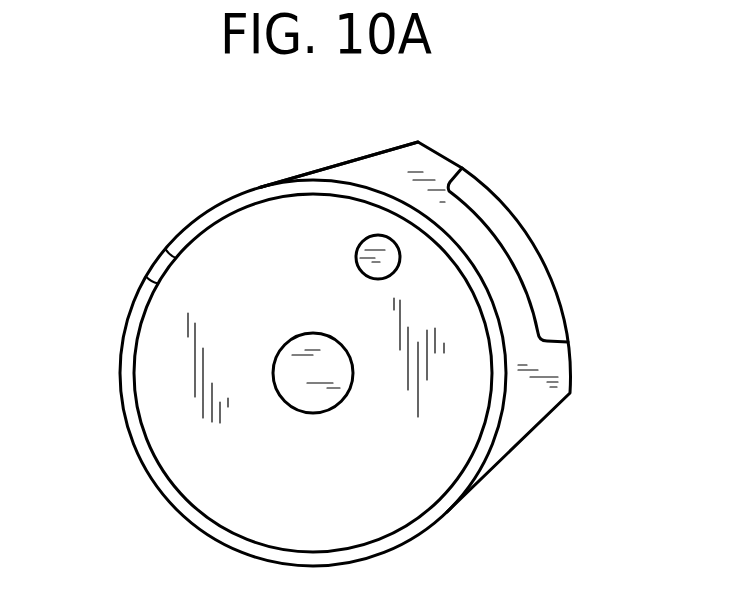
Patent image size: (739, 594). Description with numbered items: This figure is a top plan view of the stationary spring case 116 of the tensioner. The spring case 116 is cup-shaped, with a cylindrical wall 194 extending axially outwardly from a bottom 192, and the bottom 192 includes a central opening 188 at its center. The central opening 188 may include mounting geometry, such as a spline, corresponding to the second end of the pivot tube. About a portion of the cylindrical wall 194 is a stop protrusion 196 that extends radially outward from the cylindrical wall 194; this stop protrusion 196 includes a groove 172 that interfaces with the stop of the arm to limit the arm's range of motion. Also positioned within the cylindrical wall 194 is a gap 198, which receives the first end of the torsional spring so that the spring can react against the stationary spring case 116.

The spring case 116 is at (484, 505).
The groove 172 is at (490, 210).
The stop protrusion 196 is at (378, 160).
The cylindrical wall 194 is at (165, 501).
The bottom 192 is at (242, 238).
The gap 198 is at (160, 263).
The central opening 188 is at (320, 414).